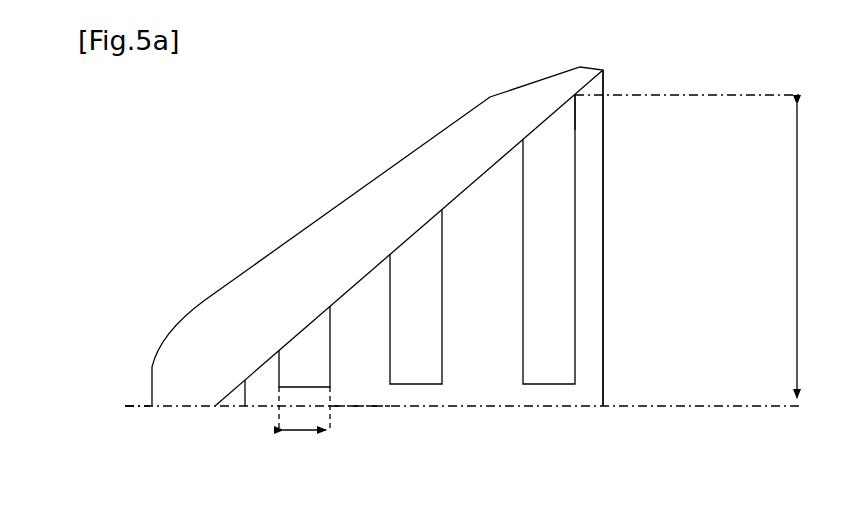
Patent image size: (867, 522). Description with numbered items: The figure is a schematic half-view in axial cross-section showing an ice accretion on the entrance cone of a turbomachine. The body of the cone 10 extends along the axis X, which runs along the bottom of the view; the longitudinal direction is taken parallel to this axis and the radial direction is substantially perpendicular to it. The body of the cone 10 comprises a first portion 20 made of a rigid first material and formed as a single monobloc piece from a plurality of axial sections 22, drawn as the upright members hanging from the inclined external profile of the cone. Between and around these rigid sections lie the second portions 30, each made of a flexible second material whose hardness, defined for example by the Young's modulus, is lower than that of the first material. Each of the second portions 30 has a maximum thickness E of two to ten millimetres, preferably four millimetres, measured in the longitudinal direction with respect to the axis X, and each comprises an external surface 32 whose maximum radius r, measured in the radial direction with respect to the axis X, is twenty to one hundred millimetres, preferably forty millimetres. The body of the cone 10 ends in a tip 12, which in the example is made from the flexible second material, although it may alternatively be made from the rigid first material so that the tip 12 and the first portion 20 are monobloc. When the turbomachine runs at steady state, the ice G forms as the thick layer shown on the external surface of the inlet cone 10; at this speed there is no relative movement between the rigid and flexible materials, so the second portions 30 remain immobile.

The cone 10 is at (508, 462).
The tip 12 is at (225, 390).
The first portion 20 is at (363, 400).
The axial sections 22 is at (510, 222).
The second portions 30 is at (542, 326).
The external surface 32 is at (560, 107).
The ice G is at (363, 213).
The axis X is at (140, 405).
The thickness E is at (305, 431).
The radius r is at (797, 252).